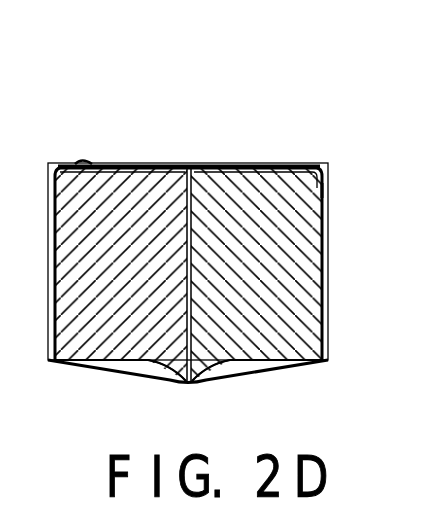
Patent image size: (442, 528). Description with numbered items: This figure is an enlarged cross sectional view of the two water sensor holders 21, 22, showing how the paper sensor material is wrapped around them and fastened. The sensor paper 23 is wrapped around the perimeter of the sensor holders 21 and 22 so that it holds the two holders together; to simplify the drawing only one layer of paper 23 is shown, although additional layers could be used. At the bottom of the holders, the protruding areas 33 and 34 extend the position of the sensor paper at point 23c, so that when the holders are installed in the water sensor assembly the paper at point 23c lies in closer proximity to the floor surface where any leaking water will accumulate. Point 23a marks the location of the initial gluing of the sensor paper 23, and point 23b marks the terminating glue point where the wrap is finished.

The sensor holder 21 is at (262, 164).
The sensor holder 22 is at (131, 164).
The sensor paper 23 is at (175, 164).
The initial gluing point 23a is at (323, 190).
The terminating glue point 23b is at (82, 161).
The sensor paper point 23c is at (187, 384).
The protruding area 33 is at (166, 372).
The protruding area 34 is at (212, 370).